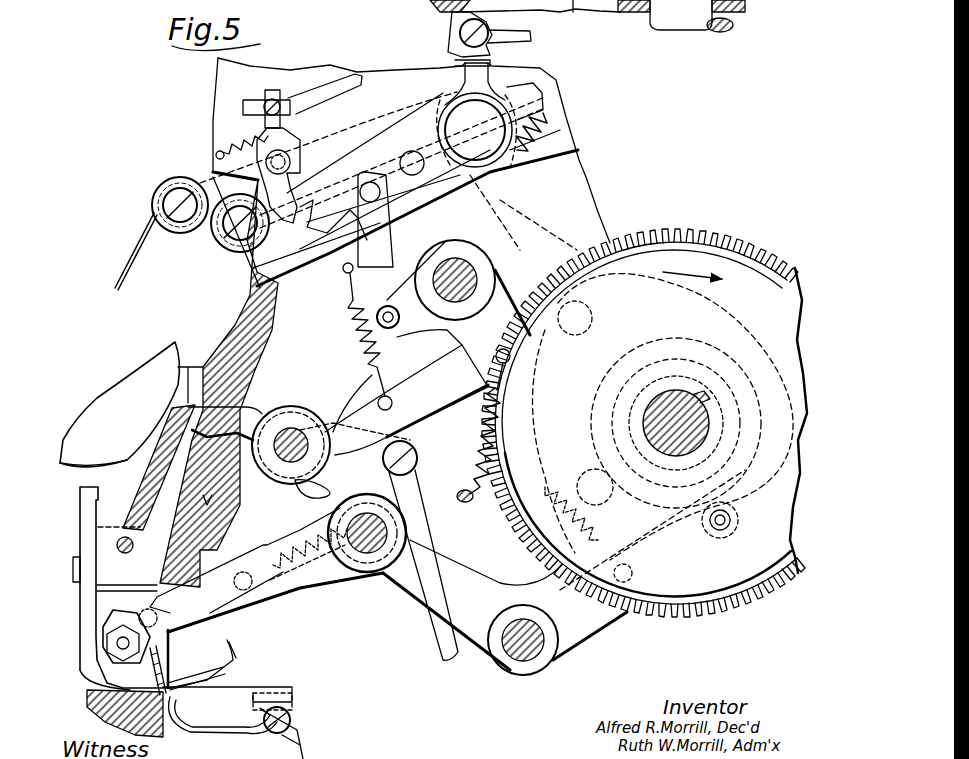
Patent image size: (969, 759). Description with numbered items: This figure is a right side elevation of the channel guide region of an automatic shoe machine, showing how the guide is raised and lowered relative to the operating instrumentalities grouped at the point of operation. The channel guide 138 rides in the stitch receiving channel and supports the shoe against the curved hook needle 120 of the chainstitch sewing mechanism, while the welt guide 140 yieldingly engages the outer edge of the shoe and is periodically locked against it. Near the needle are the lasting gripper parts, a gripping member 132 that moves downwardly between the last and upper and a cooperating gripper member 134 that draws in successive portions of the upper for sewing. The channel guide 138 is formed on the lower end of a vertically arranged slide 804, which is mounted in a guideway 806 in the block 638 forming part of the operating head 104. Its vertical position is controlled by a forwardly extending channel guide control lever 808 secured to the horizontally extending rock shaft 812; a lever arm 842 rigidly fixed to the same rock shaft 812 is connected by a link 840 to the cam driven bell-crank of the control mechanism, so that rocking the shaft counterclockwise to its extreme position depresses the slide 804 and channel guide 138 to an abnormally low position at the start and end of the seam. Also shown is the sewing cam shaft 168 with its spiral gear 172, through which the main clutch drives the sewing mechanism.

The operating head 104 is at (263, 322).
The curved hook needle 120 is at (232, 648).
The gripping member 132 is at (162, 667).
The gripper member 134 is at (165, 643).
The channel guide 138 is at (87, 660).
The welt guide 140 is at (233, 730).
The sewing cam shaft 168 is at (680, 20).
The spiral gear 172 is at (701, 232).
The block 638 is at (191, 366).
The slide 804 is at (147, 474).
The guideway 806 is at (170, 431).
The channel guide control lever 808 is at (248, 413).
The rock shaft 812 is at (294, 436).
The link 840 is at (443, 647).
The lever arm 842 is at (332, 427).